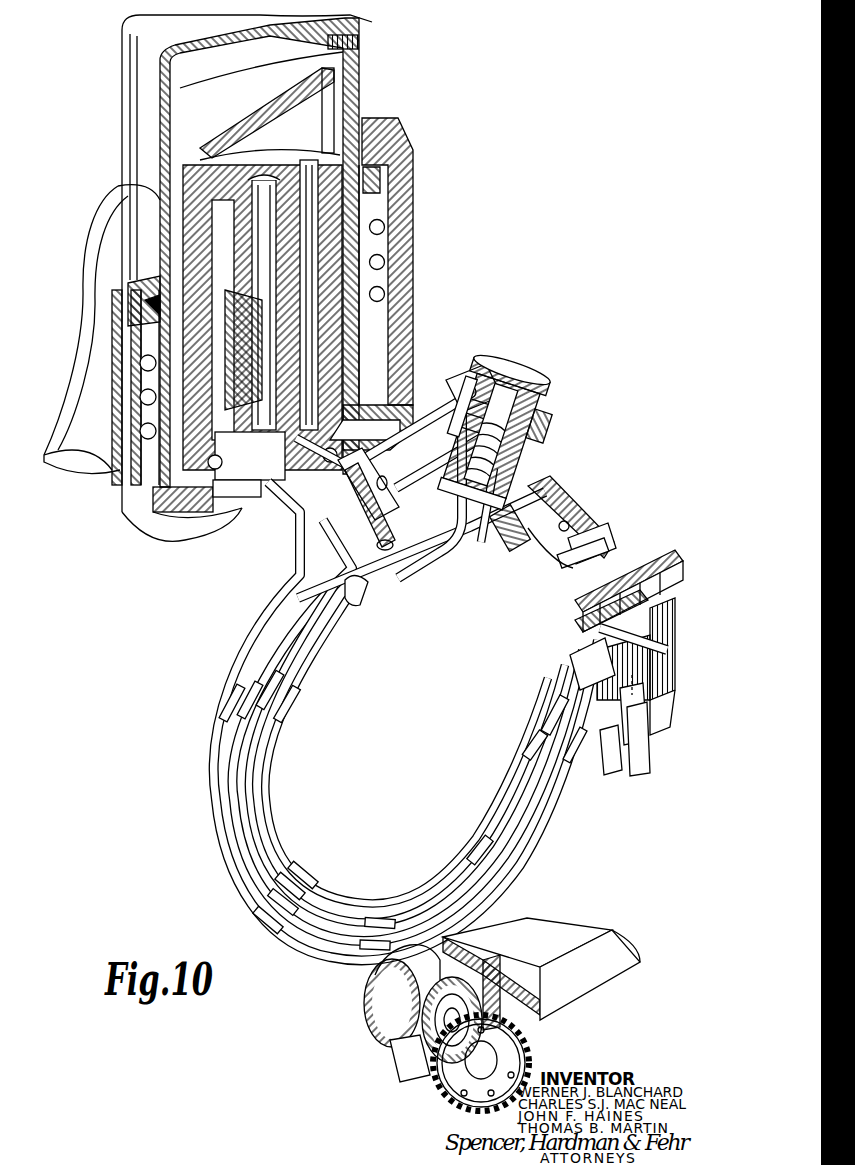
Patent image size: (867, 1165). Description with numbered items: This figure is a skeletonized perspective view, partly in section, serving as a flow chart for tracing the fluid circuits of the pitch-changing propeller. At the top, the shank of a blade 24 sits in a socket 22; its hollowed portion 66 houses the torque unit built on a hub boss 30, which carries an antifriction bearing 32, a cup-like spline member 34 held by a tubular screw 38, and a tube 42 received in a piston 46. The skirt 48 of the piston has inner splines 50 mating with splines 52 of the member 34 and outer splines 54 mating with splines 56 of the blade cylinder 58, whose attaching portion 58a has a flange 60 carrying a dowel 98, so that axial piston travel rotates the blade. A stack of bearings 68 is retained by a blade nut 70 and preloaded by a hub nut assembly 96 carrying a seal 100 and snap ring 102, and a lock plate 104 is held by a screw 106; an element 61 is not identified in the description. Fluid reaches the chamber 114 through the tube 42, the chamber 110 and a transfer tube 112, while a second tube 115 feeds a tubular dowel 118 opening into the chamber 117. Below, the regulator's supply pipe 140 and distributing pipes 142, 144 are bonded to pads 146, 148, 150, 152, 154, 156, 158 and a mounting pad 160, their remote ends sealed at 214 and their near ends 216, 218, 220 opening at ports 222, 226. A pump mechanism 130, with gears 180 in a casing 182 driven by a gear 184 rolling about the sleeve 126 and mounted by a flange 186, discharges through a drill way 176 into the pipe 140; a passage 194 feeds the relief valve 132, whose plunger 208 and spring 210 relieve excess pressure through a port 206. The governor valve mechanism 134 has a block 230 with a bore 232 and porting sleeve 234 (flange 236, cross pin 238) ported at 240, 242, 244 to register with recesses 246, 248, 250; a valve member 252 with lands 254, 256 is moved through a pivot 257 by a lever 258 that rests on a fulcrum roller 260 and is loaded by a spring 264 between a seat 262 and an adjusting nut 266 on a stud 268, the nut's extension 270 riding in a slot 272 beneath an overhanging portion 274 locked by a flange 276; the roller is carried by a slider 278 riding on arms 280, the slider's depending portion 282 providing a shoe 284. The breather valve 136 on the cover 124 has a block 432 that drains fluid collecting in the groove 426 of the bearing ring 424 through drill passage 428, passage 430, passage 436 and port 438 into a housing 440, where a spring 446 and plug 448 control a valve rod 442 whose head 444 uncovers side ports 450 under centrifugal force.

The socket 22 is at (90, 356).
The blade 24 is at (122, 103).
The hub boss 30 is at (237, 490).
The antifriction bearing 32 is at (215, 500).
The cup-like spline member 34 is at (328, 412).
The tubular screw 38 is at (276, 393).
The tube 42 is at (258, 183).
The piston member 46 is at (306, 158).
The cylindrical skirt 48 is at (372, 228).
The inner splines 50 is at (310, 348).
The complementary splines 52 is at (250, 331).
The outer splines 54 is at (205, 368).
The cylinder splines 56 is at (195, 338).
The blade cylinder 58 is at (350, 114).
The tubular attaching portion 58a is at (150, 338).
The flange 60 is at (185, 520).
The pin 61 is at (370, 378).
The axial hollowed portion 66 is at (178, 113).
The anti-friction bearings 68 is at (120, 390).
The blade nut 70 is at (150, 490).
The hub nut assembly 96 is at (110, 220).
The dowel 98 is at (345, 386).
The seal 100 is at (380, 173).
The snap ring 102 is at (380, 188).
The lock plate 104 is at (120, 298).
The screw 106 is at (135, 281).
The chamber 110 is at (275, 512).
The transfer tube 112 is at (293, 540).
The chamber 114 is at (318, 94).
The tube 115 is at (405, 468).
The chamber 117 is at (227, 530).
The tubular dowel 118 is at (315, 453).
The cover member 124 is at (662, 730).
The sleeve 126 is at (555, 923).
The pump mechanism 130 is at (380, 1034).
The relief valve 132 is at (395, 493).
The governor valve mechanism 134 is at (646, 344).
The breather valve assembly 136 is at (590, 608).
The supply pipe 140 is at (268, 630).
The distributing pipe 142 is at (432, 546).
The distributing pipe 144 is at (248, 754).
The steel pad 146 is at (290, 707).
The steel pad 148 is at (308, 871).
The steel pad 150 is at (380, 923).
The steel pad 152 is at (480, 863).
The steel pad 154 is at (530, 740).
The steel pad 156 is at (535, 546).
The steel pad 158 is at (360, 598).
The mounting pad 160 is at (438, 368).
The drill way 176 is at (408, 974).
The pump gears 180 is at (372, 1018).
The pump casing 182 is at (380, 997).
The pump driving gear 184 is at (530, 1046).
The flange 186 is at (415, 1068).
The passage 194 is at (352, 478).
The side port 206 is at (400, 541).
The valve plunger 208 is at (365, 498).
The spring 210 is at (380, 528).
The sealed extremities 214 is at (452, 398).
The pipe end 216 is at (445, 373).
The pipe end 218 is at (470, 476).
The pipe end 220 is at (510, 513).
The port 222 is at (488, 376).
The port 226 is at (502, 370).
The valve block 230 is at (525, 378).
The longitudinal bore 232 is at (482, 456).
The porting sleeve 234 is at (530, 448).
The flange 236 is at (478, 508).
The cross pin 238 is at (535, 392).
The port 240 is at (480, 440).
The port 242 is at (490, 370).
The port 244 is at (512, 382).
The cross bore 246 is at (480, 426).
The cross bore 248 is at (455, 383).
The cross bore 250 is at (510, 376).
The valve member 252 is at (525, 464).
The land 254 is at (555, 436).
The land 256 is at (530, 384).
The pivotal connection 257 is at (530, 546).
The lever 258 is at (548, 498).
The fulcrum roller 260 is at (580, 518).
The spring seat 262 is at (548, 482).
The spring 264 is at (556, 450).
The adjusting nut 266 is at (606, 418).
The threaded stud 268 is at (550, 396).
The lateral extension 270 is at (552, 406).
The slot 272 is at (556, 470).
The overhanging portion 274 is at (556, 413).
The flange 276 is at (556, 423).
The slider assembly 278 is at (560, 550).
The arms 280 is at (595, 543).
The depending portion 282 is at (530, 558).
The shoe 284 is at (540, 563).
The bearing ring 424 is at (612, 740).
The peripheral groove 426 is at (645, 760).
The drill passage 428 is at (638, 708).
The passage 430 is at (632, 686).
The block 432 is at (590, 663).
The passage 436 is at (595, 666).
The port 438 is at (598, 610).
The cylindrical housing 440 is at (652, 562).
The valve rod 442 is at (645, 580).
The valve 444 is at (610, 600).
The spring 446 is at (633, 581).
The plug 448 is at (668, 556).
The side ports 450 is at (605, 633).